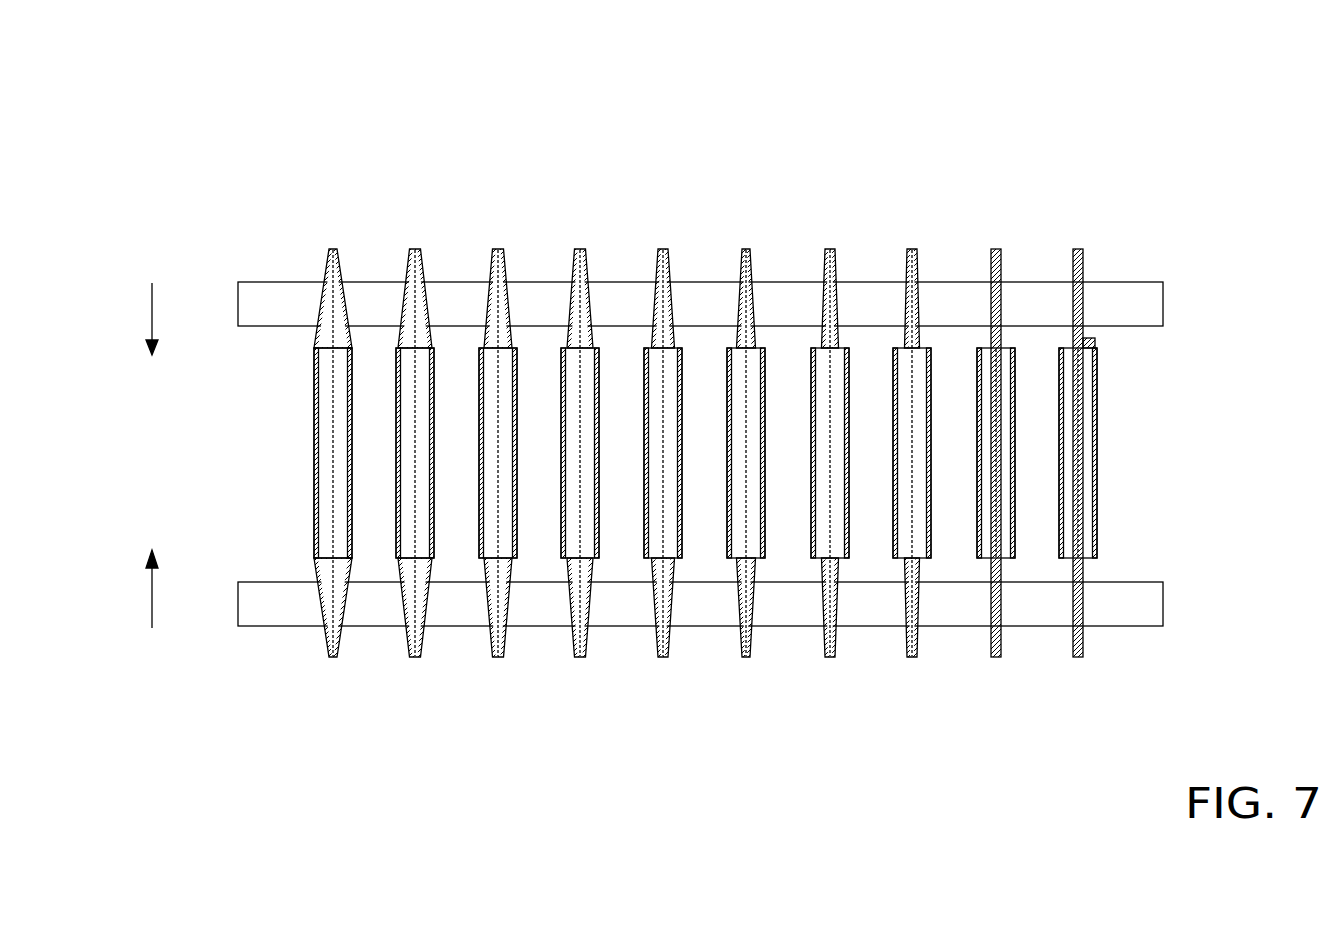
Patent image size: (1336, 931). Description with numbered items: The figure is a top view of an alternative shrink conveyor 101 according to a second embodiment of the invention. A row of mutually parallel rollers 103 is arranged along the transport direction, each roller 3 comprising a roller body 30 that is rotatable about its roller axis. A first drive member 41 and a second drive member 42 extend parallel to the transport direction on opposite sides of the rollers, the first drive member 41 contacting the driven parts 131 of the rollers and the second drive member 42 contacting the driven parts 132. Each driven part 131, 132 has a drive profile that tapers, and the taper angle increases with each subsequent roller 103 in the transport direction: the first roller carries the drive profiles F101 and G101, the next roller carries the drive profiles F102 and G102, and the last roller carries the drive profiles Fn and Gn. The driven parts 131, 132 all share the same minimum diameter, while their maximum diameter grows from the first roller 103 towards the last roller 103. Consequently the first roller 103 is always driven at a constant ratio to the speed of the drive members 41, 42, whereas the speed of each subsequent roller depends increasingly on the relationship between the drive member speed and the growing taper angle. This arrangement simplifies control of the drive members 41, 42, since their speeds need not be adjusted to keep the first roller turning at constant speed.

The shrink conveyor 101 is at (146, 132).
The first drive member 41 is at (252, 300).
The second drive member 42 is at (250, 606).
The driven part 131 is at (1085, 318).
The driven part 132 is at (1083, 601).
The roller 3 is at (652, 368).
The roller body 30 is at (1085, 363).
The roller 103 is at (408, 383).
The drive profile Fn is at (348, 300).
The drive profile Gn is at (318, 598).
The drive profile F101 is at (1083, 298).
The drive profile F102 is at (1000, 313).
The drive profile G101 is at (1082, 610).
The drive profile G102 is at (1001, 605).